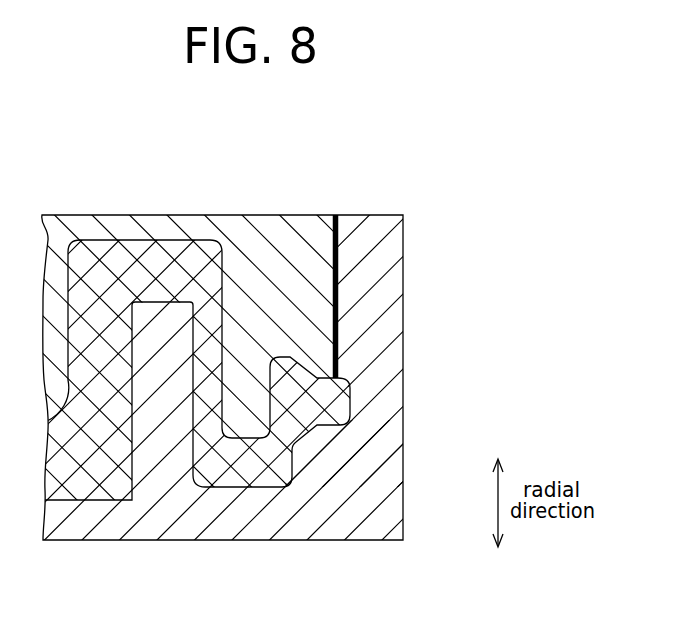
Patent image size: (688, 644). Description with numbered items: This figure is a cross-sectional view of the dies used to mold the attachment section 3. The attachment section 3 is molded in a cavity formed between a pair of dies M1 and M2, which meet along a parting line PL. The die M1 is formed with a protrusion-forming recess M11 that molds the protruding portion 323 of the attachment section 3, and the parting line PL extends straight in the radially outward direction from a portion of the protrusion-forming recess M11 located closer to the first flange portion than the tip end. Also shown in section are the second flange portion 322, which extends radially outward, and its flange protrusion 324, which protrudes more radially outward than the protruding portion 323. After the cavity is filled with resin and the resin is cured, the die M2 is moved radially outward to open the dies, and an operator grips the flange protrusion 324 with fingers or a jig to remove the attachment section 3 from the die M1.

The attachment section 3 is at (136, 248).
The die M2 is at (246, 236).
The die M1 is at (350, 513).
The protrusion-forming recess M11 is at (338, 424).
The parting line PL is at (336, 310).
The second flange portion 322 is at (283, 440).
The protruding portion 323 is at (323, 395).
The flange protrusion 324 is at (282, 362).